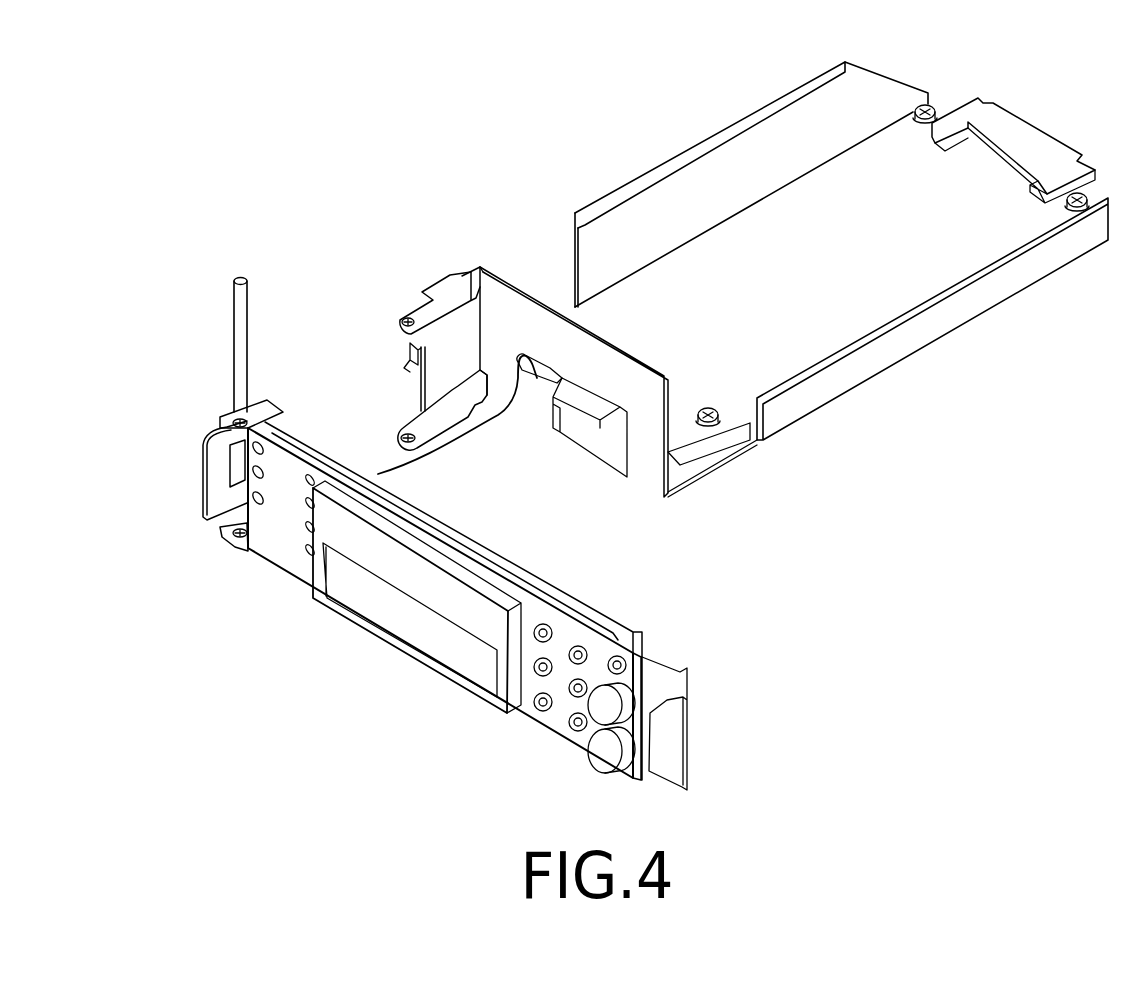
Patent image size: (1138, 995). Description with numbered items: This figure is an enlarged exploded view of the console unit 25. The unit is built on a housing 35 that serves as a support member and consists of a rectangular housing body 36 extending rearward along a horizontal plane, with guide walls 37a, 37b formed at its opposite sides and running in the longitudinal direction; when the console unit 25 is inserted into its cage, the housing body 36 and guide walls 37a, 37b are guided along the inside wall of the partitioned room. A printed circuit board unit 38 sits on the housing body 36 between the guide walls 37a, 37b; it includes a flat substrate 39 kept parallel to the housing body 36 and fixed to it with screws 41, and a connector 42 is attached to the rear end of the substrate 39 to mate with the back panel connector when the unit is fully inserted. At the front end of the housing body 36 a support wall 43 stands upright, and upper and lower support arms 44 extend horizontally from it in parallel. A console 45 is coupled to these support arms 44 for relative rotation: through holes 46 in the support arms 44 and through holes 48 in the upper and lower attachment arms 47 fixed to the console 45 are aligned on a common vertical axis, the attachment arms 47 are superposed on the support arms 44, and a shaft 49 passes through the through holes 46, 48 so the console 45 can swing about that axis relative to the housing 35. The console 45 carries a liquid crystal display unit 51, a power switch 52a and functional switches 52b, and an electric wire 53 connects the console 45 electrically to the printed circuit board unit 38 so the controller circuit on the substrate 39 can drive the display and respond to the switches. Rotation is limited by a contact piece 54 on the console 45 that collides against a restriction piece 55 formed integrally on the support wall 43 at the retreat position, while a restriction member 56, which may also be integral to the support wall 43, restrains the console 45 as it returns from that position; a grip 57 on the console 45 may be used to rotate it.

The console unit 25 is at (279, 288).
The housing 35 is at (465, 268).
The housing body 36 is at (707, 470).
The guide wall 37a is at (721, 123).
The guide wall 37b is at (905, 311).
The printed circuit board unit 38 is at (886, 143).
The substrate 39 is at (781, 301).
The screw 41 is at (931, 108).
The connector 42 is at (1033, 123).
The support wall 43 is at (613, 341).
The support arm 44 is at (400, 326).
The console 45 is at (470, 541).
The through hole 46 is at (402, 318).
The attachment arm 47 is at (224, 414).
The through hole 48 is at (233, 423).
The shaft 49 is at (234, 298).
The liquid crystal display unit 51 is at (395, 653).
The power switch 52a is at (624, 661).
The functional switch 52b is at (545, 628).
The electric wire 53 is at (505, 422).
The contact piece 54 is at (205, 481).
The restriction piece 55 is at (409, 363).
The restriction member 56 is at (612, 433).
The grip 57 is at (665, 749).